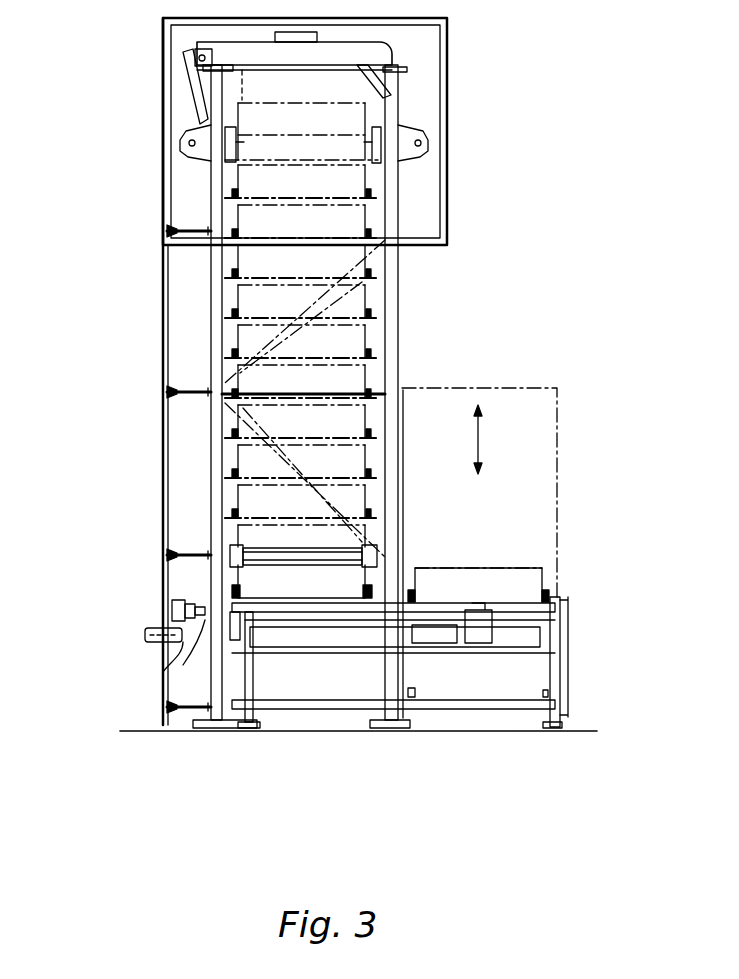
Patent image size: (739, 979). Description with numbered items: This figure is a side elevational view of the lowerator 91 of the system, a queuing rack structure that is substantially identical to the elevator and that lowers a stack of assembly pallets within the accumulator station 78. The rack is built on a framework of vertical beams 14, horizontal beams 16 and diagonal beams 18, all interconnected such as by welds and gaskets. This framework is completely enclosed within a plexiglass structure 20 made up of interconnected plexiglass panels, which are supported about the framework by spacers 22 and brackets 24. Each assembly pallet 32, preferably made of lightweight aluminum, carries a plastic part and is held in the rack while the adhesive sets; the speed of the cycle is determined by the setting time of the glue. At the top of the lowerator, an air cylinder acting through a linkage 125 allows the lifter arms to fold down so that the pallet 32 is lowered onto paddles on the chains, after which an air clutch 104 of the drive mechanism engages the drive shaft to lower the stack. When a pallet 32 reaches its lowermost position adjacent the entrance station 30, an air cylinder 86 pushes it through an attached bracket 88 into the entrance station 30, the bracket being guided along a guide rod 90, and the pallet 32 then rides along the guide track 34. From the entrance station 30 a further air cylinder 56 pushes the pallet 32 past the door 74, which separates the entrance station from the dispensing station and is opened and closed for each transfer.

The vertical beams 14 is at (210, 316).
The horizontal beams 16 is at (333, 393).
The diagonal beams 18 is at (265, 337).
The plexiglass structure 20 is at (162, 143).
The spacers 22 is at (165, 268).
The brackets 24 is at (207, 234).
The entrance station 30 is at (510, 672).
The assembly pallet 32 is at (373, 593).
The guide track 34 is at (550, 620).
The air cylinder 56 is at (480, 645).
The door 74 is at (533, 388).
The accumulator station 78 is at (310, 654).
The air cylinder 86 is at (283, 640).
The bracket 88 is at (245, 725).
The guide rod 90 is at (333, 650).
The lowerator 91 is at (125, 168).
The air clutch 104 is at (175, 650).
The linkage 125 is at (186, 90).